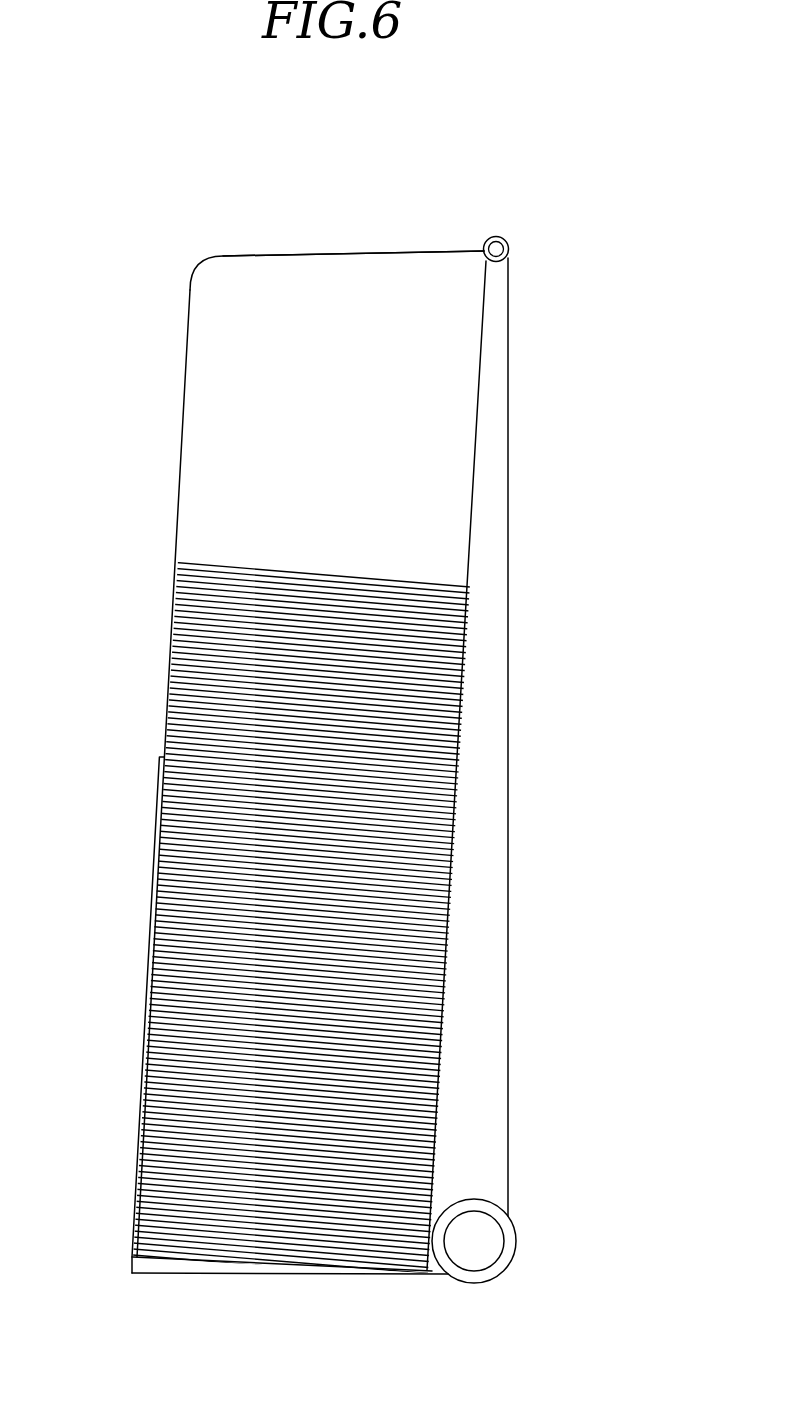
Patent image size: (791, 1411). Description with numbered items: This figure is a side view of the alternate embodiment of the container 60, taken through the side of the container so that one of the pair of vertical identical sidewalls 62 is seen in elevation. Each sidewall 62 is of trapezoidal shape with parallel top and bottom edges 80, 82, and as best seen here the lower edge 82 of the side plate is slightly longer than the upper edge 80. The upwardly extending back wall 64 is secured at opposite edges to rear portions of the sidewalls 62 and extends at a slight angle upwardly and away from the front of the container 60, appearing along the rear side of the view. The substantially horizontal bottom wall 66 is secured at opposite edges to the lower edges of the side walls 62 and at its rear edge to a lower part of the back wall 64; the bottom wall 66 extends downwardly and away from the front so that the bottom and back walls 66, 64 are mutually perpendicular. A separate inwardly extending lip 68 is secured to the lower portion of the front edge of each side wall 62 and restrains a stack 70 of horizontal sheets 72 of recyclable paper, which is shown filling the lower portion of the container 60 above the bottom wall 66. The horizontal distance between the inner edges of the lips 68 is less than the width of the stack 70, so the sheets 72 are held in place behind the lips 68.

The container 60 is at (209, 246).
The top edge 80 is at (353, 250).
The sidewall 62 is at (495, 310).
The back wall 64 is at (480, 358).
The stack 70 is at (310, 873).
The horizontal sheets 72 is at (312, 603).
The inwardly extending lip 68 is at (157, 893).
The bottom wall 66 is at (163, 1258).
The bottom edge 82 is at (262, 1274).